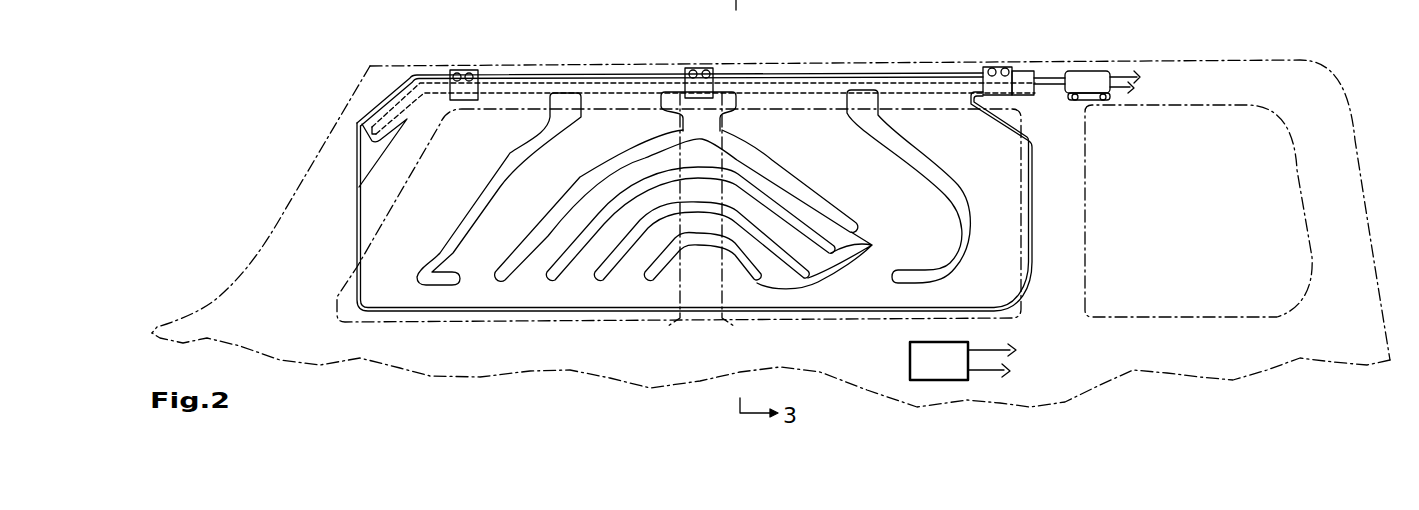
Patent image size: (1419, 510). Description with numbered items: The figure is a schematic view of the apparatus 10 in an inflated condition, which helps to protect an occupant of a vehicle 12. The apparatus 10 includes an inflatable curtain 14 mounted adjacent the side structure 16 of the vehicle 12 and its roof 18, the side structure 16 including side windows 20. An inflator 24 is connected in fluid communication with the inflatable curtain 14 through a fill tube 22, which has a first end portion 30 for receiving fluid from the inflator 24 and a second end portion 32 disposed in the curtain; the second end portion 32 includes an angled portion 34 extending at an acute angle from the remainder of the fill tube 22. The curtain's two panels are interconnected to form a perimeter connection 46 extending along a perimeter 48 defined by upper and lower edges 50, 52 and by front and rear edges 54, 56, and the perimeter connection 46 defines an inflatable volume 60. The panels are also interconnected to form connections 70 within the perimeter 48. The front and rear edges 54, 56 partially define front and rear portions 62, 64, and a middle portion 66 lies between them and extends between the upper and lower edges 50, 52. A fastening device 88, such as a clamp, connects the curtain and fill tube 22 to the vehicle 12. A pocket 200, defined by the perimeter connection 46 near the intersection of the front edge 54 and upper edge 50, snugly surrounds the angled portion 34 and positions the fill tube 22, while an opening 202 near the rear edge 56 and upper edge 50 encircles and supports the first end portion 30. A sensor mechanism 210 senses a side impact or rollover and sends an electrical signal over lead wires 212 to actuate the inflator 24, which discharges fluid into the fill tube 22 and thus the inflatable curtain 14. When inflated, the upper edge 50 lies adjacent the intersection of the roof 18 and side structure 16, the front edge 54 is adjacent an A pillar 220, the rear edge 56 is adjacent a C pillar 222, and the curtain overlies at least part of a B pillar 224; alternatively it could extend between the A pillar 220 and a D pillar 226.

The apparatus 10 is at (350, 60).
The vehicle 12 is at (310, 94).
The inflatable curtain 14 is at (600, 123).
The side structure 16 is at (433, 347).
The roof 18 is at (1182, 58).
The side windows 20 is at (353, 273).
The fill tube 22 is at (1023, 71).
The inflator 24 is at (1087, 80).
The first end portion 30 is at (1052, 78).
The second end portion 32 is at (533, 68).
The angled portion 34 is at (385, 72).
The perimeter connection 46 is at (503, 311).
The perimeter 48 is at (533, 311).
The upper edge 50 is at (862, 73).
The lower edge 52 is at (687, 311).
The front edge 54 is at (376, 193).
The rear edge 56 is at (1033, 196).
The inflatable volume 60 is at (853, 293).
The front portion 62 is at (357, 170).
The rear portion 64 is at (983, 245).
The middle portion 66 is at (705, 287).
The connections 70 is at (481, 188).
The fastening device 88 is at (466, 70).
The pocket 200 is at (373, 105).
The opening 202 is at (1010, 70).
The sensor mechanism 210 is at (933, 367).
The lead wires 212 is at (1117, 67).
The A pillar 220 is at (295, 230).
The C pillar 222 is at (1050, 137).
The B pillar 224 is at (700, 265).
The D pillar 226 is at (1333, 200).